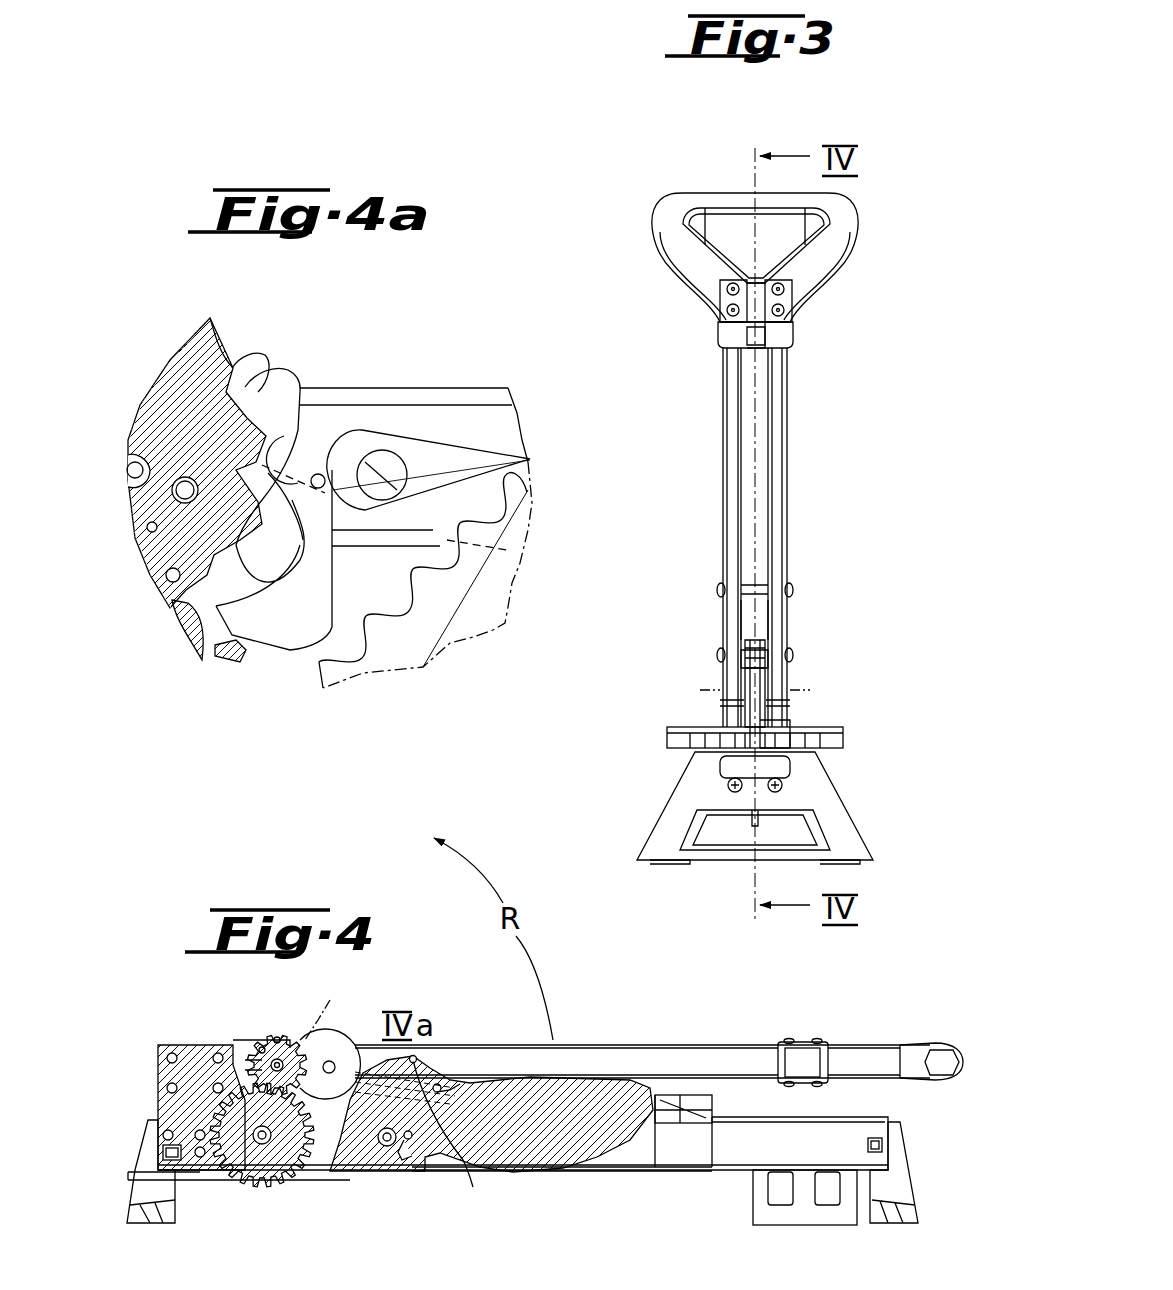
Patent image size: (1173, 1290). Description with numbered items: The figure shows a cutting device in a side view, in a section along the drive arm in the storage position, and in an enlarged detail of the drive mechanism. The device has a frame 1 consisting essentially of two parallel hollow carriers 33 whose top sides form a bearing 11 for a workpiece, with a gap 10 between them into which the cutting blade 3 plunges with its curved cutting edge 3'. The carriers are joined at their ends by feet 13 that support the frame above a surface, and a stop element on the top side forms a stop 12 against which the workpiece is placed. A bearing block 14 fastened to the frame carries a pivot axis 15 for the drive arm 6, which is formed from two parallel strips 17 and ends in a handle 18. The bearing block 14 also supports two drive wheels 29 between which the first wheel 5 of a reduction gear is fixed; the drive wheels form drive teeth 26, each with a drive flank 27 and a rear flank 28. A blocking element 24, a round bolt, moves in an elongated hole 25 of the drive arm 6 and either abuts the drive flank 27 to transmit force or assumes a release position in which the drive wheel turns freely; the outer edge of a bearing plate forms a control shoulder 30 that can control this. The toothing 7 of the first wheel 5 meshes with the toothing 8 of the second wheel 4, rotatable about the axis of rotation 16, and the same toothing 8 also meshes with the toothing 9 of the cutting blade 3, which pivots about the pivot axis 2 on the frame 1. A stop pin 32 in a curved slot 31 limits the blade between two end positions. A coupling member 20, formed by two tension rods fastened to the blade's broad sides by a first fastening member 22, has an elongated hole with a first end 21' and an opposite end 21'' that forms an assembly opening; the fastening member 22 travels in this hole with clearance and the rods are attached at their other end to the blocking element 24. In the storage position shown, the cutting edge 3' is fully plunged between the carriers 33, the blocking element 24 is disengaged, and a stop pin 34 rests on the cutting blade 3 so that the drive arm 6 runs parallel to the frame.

In FIG. 3, the frame 1 is at (712, 640).
In FIG. 4, the frame 1 is at (570, 1035).
In FIG. 4, the pivot axis 2 is at (387, 1148).
In FIG. 4A, the cutting blade 3 is at (434, 580).
In FIG. 4, the cutting blade 3 is at (521, 1153).
In FIG. 4, the cutting edge 3' is at (526, 1212).
In FIG. 4, the second wheel 4 is at (251, 1165).
In FIG. 4A, the first wheel 5 is at (158, 396).
In FIG. 3, the drive arm 6 is at (773, 478).
In FIG. 4, the drive arm 6 is at (750, 1058).
In FIG. 4, the toothing 7 is at (250, 1068).
In FIG. 4A, the toothing 8 is at (220, 646).
In FIG. 4, the toothing 8 is at (278, 1187).
In FIG. 4, the toothing 9 is at (316, 1162).
In FIG. 4, the gap 10 is at (658, 1125).
In FIG. 3, the bearing 11 is at (790, 736).
In FIG. 3, the stop 12 is at (840, 742).
In FIG. 4, the stop 12 is at (666, 1100).
In FIG. 3, the foot 13 is at (683, 808).
In FIG. 4, the foot 13 is at (153, 1192).
In FIG. 3, the bearing block 14 is at (748, 690).
In FIG. 4, the bearing block 14 is at (176, 1070).
In FIG. 3, the pivot axis 15 is at (803, 690).
In FIG. 4A, the pivot axis 15 is at (130, 472).
In FIG. 4, the pivot axis 15 is at (248, 1060).
In FIG. 4, the axis of rotation 16 is at (258, 1142).
In FIG. 3, the strip 17 is at (733, 400).
In FIG. 4, the strip 17 is at (613, 1052).
In FIG. 3, the handle 18 is at (706, 198).
In FIG. 4, the handle 18 is at (926, 1055).
In FIG. 4A, the coupling member 20 is at (470, 448).
In FIG. 4, the coupling member 20 is at (332, 1061).
In FIG. 4, the end 21' is at (441, 1038).
In FIG. 4, the end 21'' is at (357, 1237).
In FIG. 4, the first fastening member 22 is at (441, 1085).
In FIG. 4A, the blocking element 24 is at (392, 467).
In FIG. 4A, the elongated hole 25 is at (303, 445).
In FIG. 4, the elongated hole 25 is at (323, 1072).
In FIG. 4A, the drive teeth 26 is at (292, 370).
In FIG. 4, the drive teeth 26 is at (260, 1052).
In FIG. 4A, the drive flank 27 is at (266, 382).
In FIG. 4, the drive flank 27 is at (262, 1043).
In FIG. 4A, the rear flank 28 is at (226, 352).
In FIG. 4, the rear flank 28 is at (273, 1033).
In FIG. 4, the drive wheel 29 is at (252, 1078).
In FIG. 4A, the control shoulder 30 is at (322, 478).
In FIG. 4, the curved slot 31 is at (404, 1152).
In FIG. 4, the stop pin 32 is at (412, 1140).
In FIG. 4, the carrier 33 is at (705, 1155).
In FIG. 3, the stop pin 34 is at (762, 590).
In FIG. 4, the stop pin 34 is at (418, 1075).